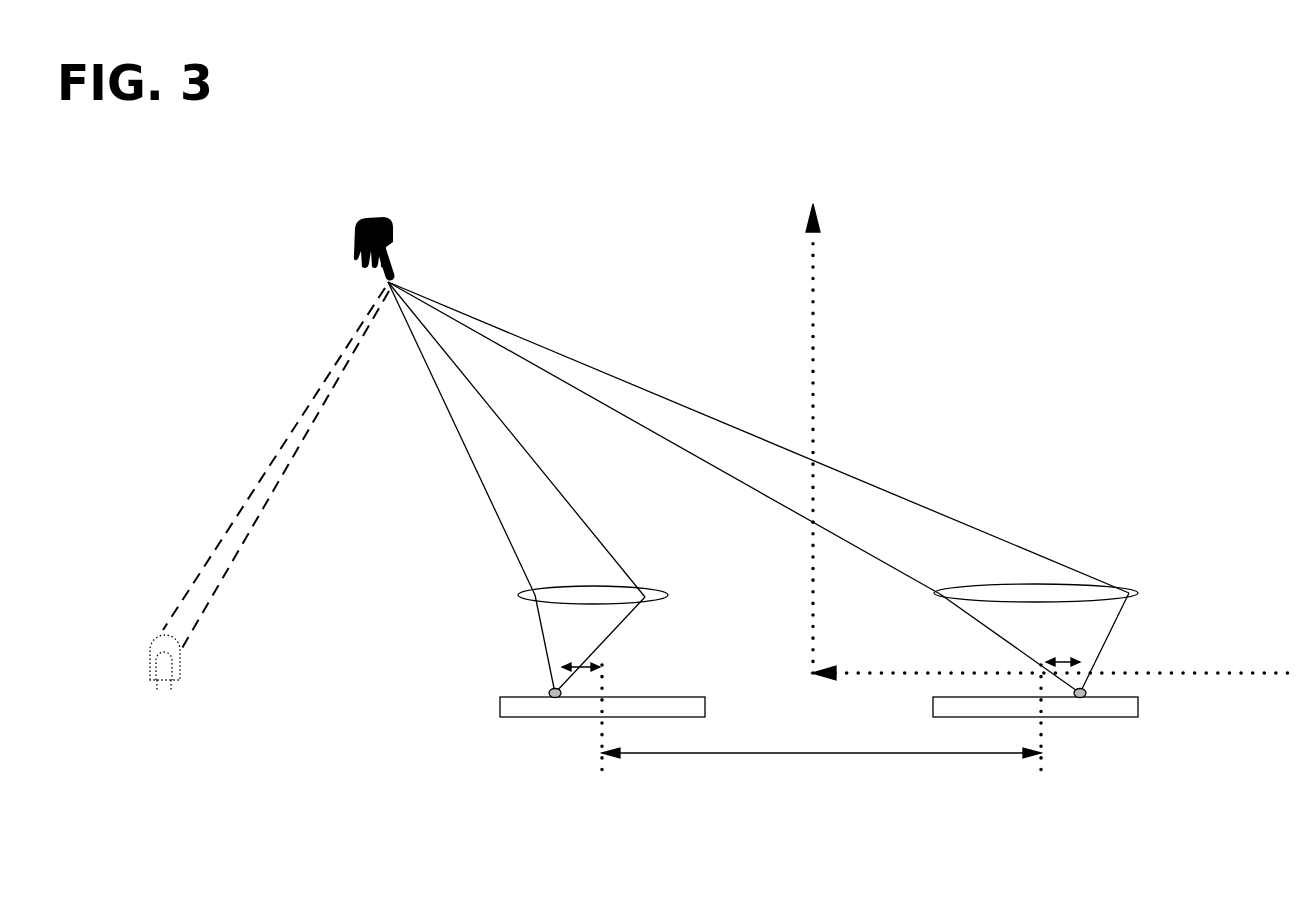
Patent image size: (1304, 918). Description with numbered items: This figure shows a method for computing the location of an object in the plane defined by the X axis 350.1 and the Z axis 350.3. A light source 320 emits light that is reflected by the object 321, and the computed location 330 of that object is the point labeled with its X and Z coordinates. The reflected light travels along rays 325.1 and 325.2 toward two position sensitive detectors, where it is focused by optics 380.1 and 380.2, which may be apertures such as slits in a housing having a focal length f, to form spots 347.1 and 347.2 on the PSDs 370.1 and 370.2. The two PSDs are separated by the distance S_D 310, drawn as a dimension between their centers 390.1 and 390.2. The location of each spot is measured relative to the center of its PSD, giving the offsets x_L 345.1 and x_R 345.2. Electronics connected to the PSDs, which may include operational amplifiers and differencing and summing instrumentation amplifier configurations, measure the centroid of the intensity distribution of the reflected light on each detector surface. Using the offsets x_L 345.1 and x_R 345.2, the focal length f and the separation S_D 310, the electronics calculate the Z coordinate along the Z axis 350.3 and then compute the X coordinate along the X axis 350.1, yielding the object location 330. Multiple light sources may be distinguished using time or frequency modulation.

The distance S_D between the two PSDs 310 is at (821, 790).
The light source 320 is at (182, 652).
The object 321 is at (352, 224).
The reflected light ray 325.1 is at (748, 483).
The reflected light ray 325.2 is at (873, 478).
The location of the object 330 is at (457, 234).
The x_L spot location 345.1 is at (583, 646).
The x_R spot location 345.2 is at (1062, 636).
The spot 347.1 is at (510, 695).
The spot 347.2 is at (1093, 688).
The X axis 350.1 is at (858, 648).
The Z axis 350.3 is at (790, 545).
The PSD 370.1 is at (530, 719).
The PSD 370.2 is at (1113, 718).
The optics 380.1 is at (510, 587).
The optics 380.2 is at (1116, 590).
The center of the PSD 390.1 is at (600, 762).
The center of the PSD 390.2 is at (1043, 763).